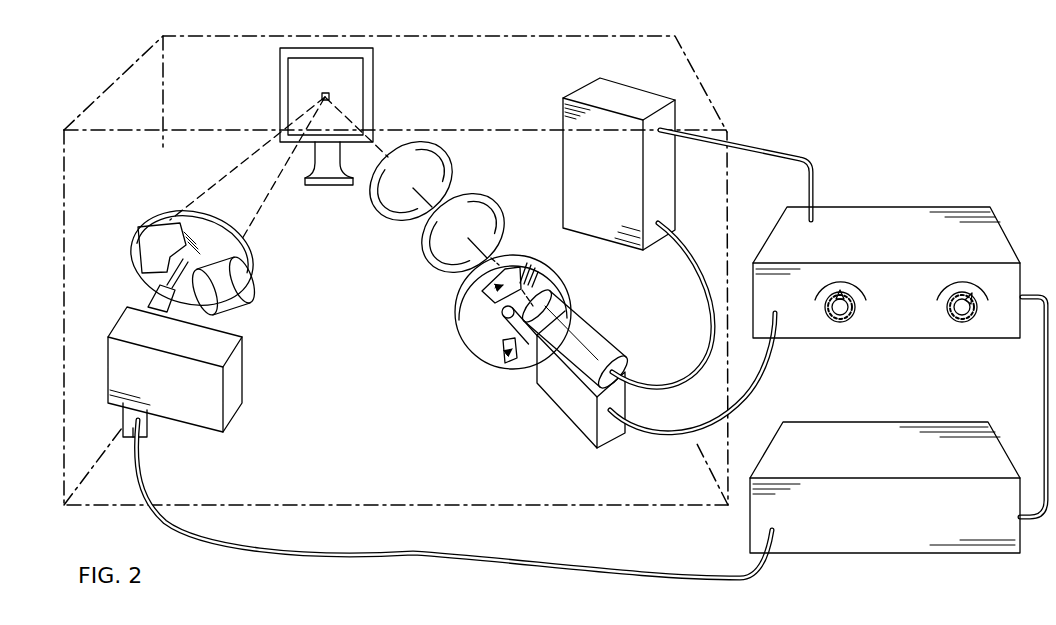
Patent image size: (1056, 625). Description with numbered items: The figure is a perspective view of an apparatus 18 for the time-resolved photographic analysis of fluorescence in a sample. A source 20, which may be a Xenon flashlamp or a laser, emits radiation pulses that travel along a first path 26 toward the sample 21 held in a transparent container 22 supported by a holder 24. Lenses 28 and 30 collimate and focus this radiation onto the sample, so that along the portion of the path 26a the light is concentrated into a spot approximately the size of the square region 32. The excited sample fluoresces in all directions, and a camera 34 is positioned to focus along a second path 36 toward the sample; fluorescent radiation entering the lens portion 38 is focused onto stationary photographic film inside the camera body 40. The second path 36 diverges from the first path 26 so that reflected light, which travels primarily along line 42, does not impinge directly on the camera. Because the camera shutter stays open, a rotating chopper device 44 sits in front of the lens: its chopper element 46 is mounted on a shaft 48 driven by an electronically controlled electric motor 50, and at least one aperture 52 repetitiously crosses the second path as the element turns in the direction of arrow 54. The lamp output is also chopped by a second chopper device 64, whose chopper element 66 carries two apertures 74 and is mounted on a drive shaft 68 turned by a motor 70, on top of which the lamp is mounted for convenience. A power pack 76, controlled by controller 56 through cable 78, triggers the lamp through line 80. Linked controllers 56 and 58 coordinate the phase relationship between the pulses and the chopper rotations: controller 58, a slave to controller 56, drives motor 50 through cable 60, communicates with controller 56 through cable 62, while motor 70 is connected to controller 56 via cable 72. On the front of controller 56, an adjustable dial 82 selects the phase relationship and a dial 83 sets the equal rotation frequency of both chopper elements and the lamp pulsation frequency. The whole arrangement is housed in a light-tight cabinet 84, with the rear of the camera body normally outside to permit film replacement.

The apparatus 18 is at (488, 120).
The source 20 is at (585, 311).
The sample 21 is at (357, 75).
The transparent container 22 is at (368, 92).
The holder 24 is at (331, 173).
The first path 26 is at (493, 260).
The portion of the path 26a is at (356, 122).
The lens 28 is at (473, 207).
The lens 30 is at (425, 163).
The square region 32 is at (332, 80).
The camera 34 is at (189, 310).
The second path 36 is at (268, 190).
The lens portion 38 is at (242, 298).
The camera body 40 is at (240, 398).
The line of reflected light 42 is at (225, 175).
The rotating chopper device 44 is at (160, 210).
The rotating chopper element 46 is at (150, 280).
The shaft 48 is at (170, 283).
The electric motor 50 is at (125, 312).
The aperture 52 is at (152, 240).
The arrow 54 is at (193, 205).
The controller 56 is at (896, 272).
The controller 58 is at (845, 440).
The cable 60 is at (380, 552).
The cable 62 is at (1043, 398).
The second chopper device 64 is at (517, 340).
The second chopper element 66 is at (478, 321).
The drive shaft 68 is at (507, 320).
The motor 70 is at (562, 388).
The cable 72 is at (757, 395).
The apertures 74 is at (482, 291).
The power pack 76 is at (631, 99).
The cable 78 is at (742, 147).
The line 80 is at (687, 248).
The adjustable dial 82 is at (849, 324).
The dial 83 is at (971, 324).
The cabinet 84 is at (102, 67).